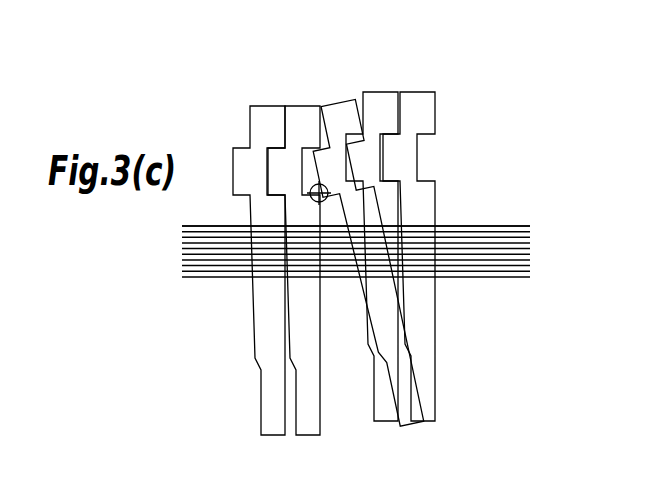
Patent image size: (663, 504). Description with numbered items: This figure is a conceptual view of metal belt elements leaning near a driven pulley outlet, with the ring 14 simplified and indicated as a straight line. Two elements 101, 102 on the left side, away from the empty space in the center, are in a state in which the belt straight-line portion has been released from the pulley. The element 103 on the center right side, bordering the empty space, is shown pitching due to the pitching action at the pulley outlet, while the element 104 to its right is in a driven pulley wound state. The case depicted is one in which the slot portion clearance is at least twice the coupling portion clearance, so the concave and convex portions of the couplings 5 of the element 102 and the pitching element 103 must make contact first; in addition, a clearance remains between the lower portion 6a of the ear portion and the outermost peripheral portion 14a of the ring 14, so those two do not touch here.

The element 101 is at (258, 110).
The element 102 is at (298, 110).
The element 103 is at (341, 103).
The element 104 is at (426, 97).
The coupling 5 is at (322, 160).
The lower portion of the ear portion 6a is at (345, 219).
The ring 14 is at (536, 225).
The outermost peripheral portion of the ring 14a is at (459, 225).